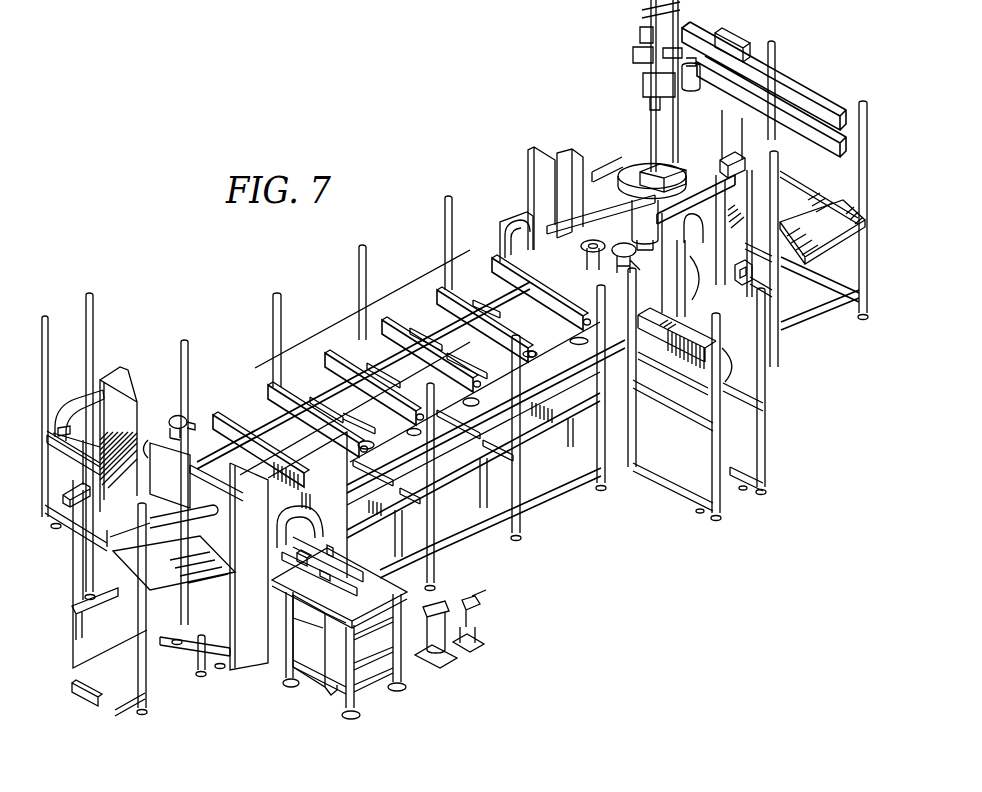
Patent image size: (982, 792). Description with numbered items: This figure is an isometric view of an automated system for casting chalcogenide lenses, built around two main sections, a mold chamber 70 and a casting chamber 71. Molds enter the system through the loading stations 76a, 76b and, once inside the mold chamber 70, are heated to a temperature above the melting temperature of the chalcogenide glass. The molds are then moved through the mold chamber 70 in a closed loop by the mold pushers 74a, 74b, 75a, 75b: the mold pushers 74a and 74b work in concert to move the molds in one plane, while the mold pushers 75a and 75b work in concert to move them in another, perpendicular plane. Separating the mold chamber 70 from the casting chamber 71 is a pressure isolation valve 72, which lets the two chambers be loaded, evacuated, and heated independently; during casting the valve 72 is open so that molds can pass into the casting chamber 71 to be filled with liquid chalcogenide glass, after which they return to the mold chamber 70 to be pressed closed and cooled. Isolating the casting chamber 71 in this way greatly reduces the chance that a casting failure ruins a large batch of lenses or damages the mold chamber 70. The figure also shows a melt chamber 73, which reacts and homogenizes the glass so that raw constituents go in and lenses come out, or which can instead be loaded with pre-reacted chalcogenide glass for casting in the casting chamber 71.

The mold chamber 70 is at (495, 382).
The casting chamber 71 is at (705, 288).
The pressure isolation valve 72 is at (618, 238).
The melt chamber 73 is at (623, 160).
The mold pusher 74a is at (688, 378).
The mold pusher 74b is at (74, 381).
The mold pusher 75a is at (595, 213).
The mold pusher 75b is at (193, 575).
The loading station 76a is at (509, 223).
The loading station 76b is at (304, 520).